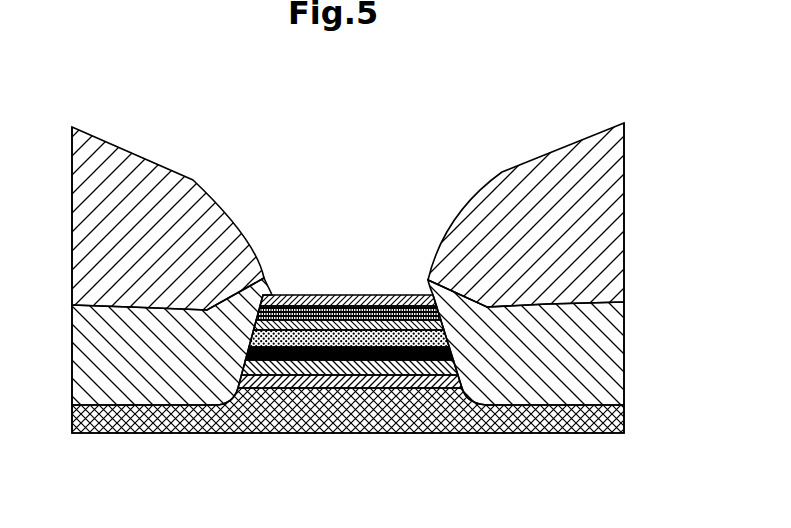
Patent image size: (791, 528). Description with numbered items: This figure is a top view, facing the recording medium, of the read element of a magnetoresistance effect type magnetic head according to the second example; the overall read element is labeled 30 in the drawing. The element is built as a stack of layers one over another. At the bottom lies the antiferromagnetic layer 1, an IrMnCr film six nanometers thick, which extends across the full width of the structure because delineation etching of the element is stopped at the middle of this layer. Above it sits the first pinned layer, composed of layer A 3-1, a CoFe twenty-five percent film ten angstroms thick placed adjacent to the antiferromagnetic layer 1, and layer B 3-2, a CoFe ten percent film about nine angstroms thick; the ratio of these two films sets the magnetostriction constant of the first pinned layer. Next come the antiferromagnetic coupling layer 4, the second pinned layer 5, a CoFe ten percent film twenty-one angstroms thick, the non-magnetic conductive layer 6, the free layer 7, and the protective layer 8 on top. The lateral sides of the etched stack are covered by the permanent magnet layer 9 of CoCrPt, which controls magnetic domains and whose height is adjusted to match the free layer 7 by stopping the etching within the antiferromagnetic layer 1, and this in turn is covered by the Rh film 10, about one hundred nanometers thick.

The light emitting element 30 is at (425, 134).
The Rh film 10 is at (614, 225).
The permanent magnet layer 9 is at (613, 355).
The antiferromagnetic layer 1 is at (298, 403).
The layer A 3-1 is at (344, 384).
The layer B 3-2 is at (392, 365).
The antiferromagnetic coupling layer 4 is at (290, 318).
The second pinned layer 5 is at (322, 316).
The non-magnetic conductive layer 6 is at (350, 309).
The free layer 7 is at (376, 304).
The protective layer 8 is at (400, 298).